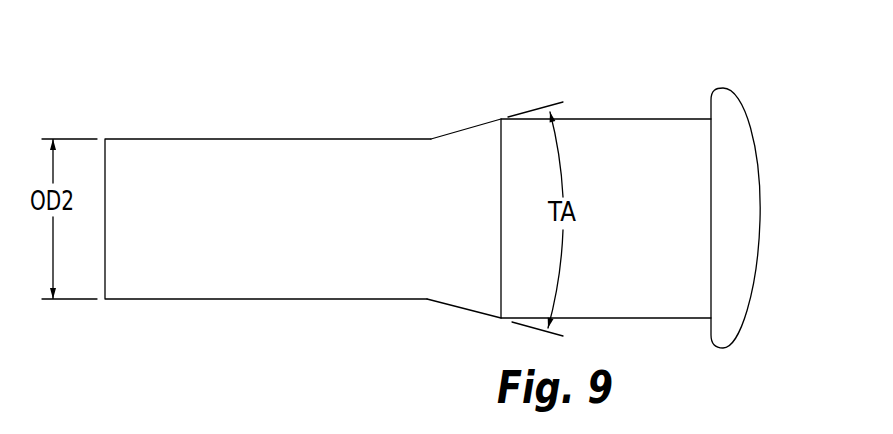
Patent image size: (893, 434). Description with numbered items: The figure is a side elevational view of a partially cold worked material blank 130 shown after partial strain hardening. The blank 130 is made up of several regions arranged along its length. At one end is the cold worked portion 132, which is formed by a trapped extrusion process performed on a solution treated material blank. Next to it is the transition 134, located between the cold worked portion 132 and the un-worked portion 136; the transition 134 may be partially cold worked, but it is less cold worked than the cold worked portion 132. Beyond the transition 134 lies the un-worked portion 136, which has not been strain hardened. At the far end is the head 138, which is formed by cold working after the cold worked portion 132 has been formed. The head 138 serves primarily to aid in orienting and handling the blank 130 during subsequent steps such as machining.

The partially cold worked material blank 130 is at (485, 200).
The cold worked portion 132 is at (181, 235).
The transition 134 is at (455, 250).
The un-worked portion 136 is at (610, 145).
The head 138 is at (732, 243).